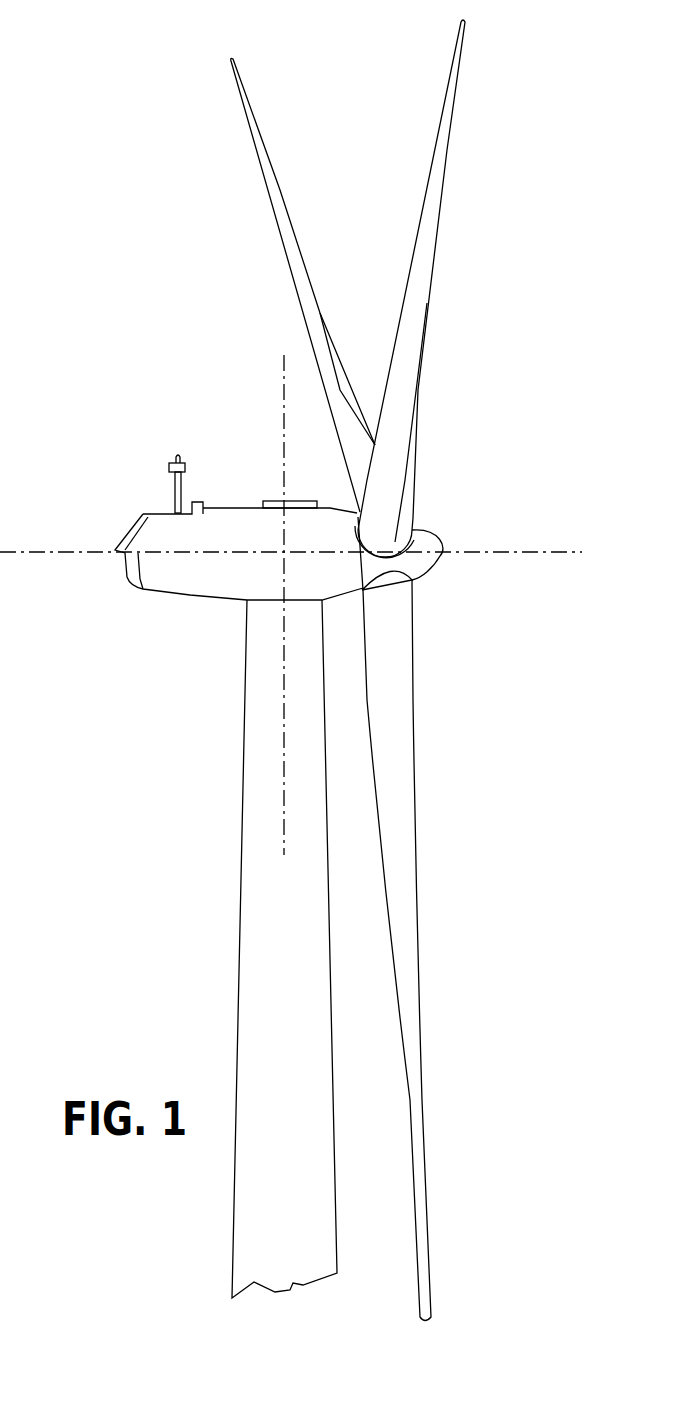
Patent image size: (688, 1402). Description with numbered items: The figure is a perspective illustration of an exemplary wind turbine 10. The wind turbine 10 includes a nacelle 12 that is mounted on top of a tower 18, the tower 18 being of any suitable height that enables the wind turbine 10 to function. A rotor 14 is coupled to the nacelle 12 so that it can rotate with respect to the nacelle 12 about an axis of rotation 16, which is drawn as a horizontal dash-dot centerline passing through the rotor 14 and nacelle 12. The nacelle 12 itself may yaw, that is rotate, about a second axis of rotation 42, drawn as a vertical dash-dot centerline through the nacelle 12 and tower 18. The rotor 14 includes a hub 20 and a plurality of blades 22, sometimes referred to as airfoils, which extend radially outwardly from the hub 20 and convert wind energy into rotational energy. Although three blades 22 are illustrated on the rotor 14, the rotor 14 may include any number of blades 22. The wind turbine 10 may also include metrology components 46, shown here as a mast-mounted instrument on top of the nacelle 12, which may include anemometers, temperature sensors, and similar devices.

The wind turbine 10 is at (306, 670).
The nacelle 12 is at (219, 554).
The rotor 14 is at (375, 670).
The axis of rotation 16 is at (538, 555).
The tower 18 is at (238, 905).
The hub 20 is at (432, 568).
The blades 22 is at (265, 152).
The axis of rotation 42 is at (283, 367).
The metrology components 46 is at (170, 475).